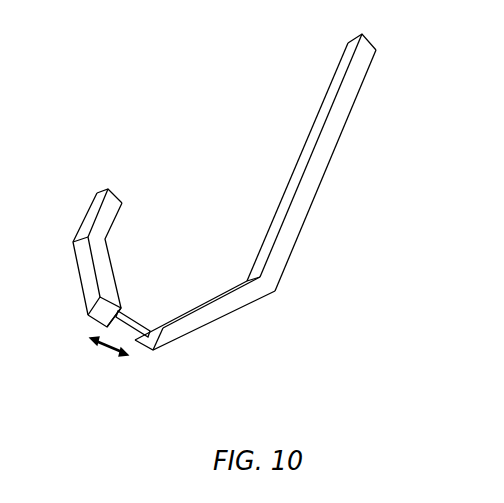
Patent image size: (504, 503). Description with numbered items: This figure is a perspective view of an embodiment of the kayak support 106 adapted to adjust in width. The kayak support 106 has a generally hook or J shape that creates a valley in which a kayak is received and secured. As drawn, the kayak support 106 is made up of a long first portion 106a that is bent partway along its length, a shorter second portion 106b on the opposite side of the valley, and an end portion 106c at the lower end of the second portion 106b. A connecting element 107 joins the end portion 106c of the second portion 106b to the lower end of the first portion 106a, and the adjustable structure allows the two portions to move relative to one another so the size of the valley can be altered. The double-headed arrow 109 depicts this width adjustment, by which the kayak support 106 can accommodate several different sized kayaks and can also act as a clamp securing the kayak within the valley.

The kayak support 106 is at (254, 185).
The first arm of clip 106a is at (299, 235).
The second arm of clip 106b is at (85, 218).
The end portion of second arm 106c is at (127, 302).
The connecting pin 107 is at (147, 324).
The arrow 109 is at (105, 355).